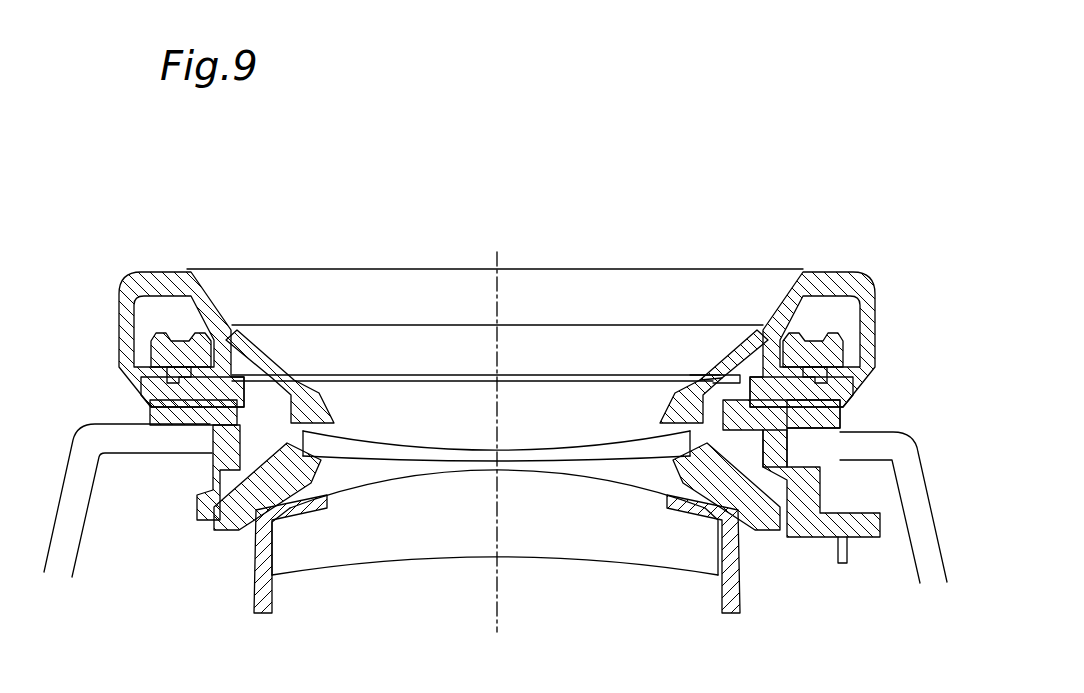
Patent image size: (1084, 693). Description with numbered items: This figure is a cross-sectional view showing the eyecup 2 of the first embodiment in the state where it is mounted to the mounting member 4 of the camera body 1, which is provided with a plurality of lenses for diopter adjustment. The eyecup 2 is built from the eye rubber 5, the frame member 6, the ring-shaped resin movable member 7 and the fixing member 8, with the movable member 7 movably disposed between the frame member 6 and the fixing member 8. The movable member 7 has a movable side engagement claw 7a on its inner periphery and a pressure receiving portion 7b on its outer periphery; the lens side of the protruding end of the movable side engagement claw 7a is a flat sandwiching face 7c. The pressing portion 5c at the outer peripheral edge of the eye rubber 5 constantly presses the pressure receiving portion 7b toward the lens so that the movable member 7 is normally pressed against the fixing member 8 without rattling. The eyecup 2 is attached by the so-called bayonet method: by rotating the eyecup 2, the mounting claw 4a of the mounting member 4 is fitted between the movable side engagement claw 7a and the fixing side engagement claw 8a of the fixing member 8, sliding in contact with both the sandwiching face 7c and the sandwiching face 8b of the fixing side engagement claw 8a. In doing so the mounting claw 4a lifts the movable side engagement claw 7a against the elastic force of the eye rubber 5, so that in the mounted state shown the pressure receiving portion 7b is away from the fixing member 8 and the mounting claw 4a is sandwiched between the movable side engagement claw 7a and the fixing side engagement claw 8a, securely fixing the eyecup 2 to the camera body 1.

The camera body 1 is at (920, 450).
The eyecup 2 is at (842, 234).
The mounting member 4 is at (697, 387).
The mounting claw 4a is at (717, 380).
The eye rubber 5 is at (868, 282).
The pressing portion 5c is at (860, 381).
The frame member 6 is at (848, 343).
The movable member 7 is at (738, 375).
The movable side engagement claw 7a is at (735, 375).
The pressure receiving portion 7b is at (815, 403).
The sandwiching face 7c is at (705, 383).
The fixing member 8 is at (842, 411).
The fixing side engagement claw 8a is at (748, 470).
The sandwiching face 8b is at (693, 432).